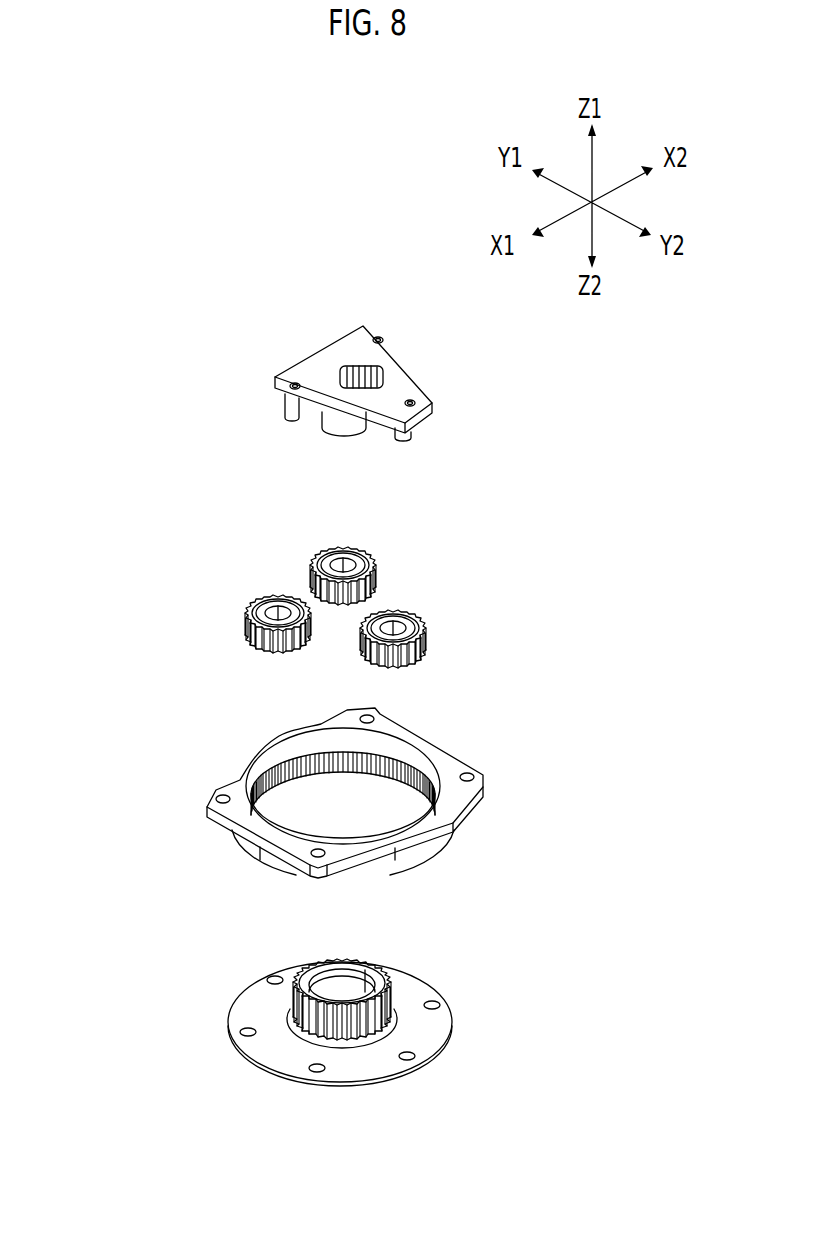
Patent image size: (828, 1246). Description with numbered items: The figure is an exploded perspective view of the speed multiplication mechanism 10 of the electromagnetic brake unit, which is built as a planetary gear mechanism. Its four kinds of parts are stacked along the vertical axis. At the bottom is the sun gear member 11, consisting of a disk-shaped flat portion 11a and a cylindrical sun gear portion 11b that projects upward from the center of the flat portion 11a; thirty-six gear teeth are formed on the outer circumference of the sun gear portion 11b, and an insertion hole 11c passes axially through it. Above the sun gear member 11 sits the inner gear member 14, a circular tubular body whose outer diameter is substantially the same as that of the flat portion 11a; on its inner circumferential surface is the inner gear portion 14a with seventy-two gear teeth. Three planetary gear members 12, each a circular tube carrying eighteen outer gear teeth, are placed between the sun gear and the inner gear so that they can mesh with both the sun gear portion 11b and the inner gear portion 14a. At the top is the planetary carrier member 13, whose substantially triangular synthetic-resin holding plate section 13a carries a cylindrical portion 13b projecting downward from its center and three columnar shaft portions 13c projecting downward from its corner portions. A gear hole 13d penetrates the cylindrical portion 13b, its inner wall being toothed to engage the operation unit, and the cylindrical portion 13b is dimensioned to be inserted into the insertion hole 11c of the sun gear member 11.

The speed multiplication mechanism 10 is at (234, 309).
The sun gear member 11 is at (430, 1031).
The flat portion 11a is at (412, 992).
The sun gear portion 11b is at (293, 1005).
The insertion hole 11c is at (335, 993).
The planetary gear member 12 is at (427, 648).
The planetary carrier member 13 is at (269, 400).
The holding plate section 13a is at (322, 371).
The cylindrical portion 13b is at (345, 430).
The shaft portion 13c is at (412, 440).
The gear hole 13d is at (372, 368).
The inner gear member 14 is at (220, 828).
The inner gear portion 14a is at (300, 760).